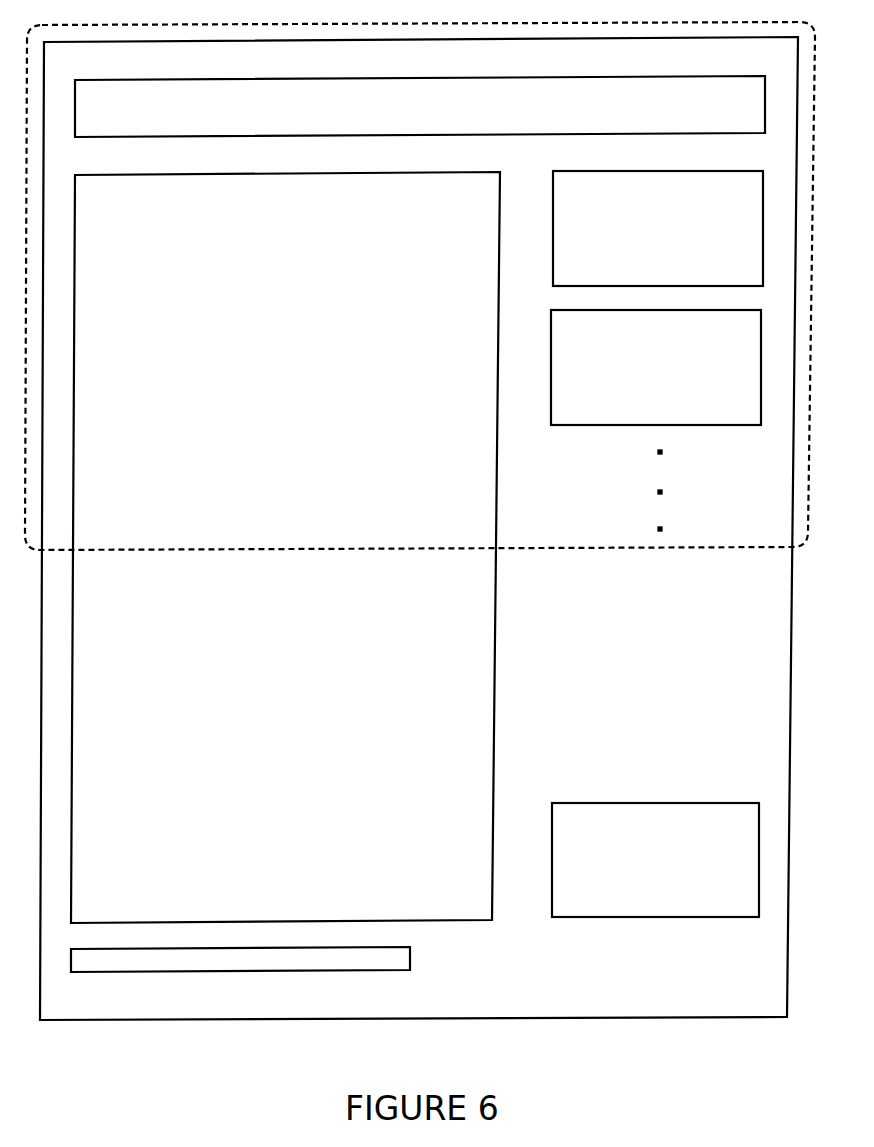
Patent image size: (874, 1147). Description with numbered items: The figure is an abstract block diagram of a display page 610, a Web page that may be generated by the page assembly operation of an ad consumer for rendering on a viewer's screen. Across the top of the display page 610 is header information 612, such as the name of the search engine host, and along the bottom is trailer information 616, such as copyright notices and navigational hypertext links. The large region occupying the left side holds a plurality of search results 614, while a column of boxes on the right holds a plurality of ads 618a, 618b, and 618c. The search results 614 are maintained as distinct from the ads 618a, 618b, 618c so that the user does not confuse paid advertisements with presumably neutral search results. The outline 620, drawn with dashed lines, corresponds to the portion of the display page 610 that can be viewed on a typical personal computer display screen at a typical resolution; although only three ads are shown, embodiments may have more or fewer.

The display page 610 is at (408, 1018).
The header information 612 is at (425, 78).
The search results 614 is at (494, 678).
The trailer information 616 is at (411, 960).
The ad 618a is at (660, 170).
The ad 618b is at (658, 309).
The ad 618c is at (658, 802).
The outline 620 is at (773, 546).